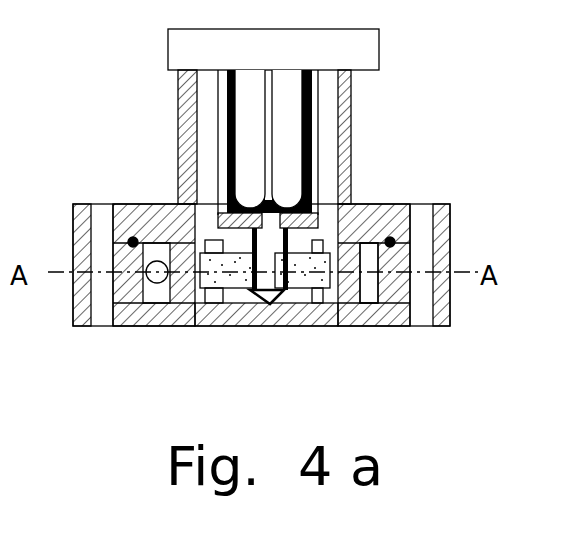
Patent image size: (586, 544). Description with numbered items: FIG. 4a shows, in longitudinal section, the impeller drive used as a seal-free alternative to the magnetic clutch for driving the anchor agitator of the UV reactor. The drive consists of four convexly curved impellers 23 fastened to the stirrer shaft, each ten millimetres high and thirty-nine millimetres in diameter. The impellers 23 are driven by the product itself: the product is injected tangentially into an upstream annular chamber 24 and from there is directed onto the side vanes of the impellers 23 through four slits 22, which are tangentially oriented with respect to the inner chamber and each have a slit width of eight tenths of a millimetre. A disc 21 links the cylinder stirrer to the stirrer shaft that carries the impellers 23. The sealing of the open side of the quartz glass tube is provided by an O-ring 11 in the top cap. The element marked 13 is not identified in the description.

The O-ring 11 is at (135, 246).
The ball 13 is at (152, 262).
The disc 21 is at (302, 212).
The slits 22 is at (318, 288).
The convexly curved impellers 23 is at (237, 272).
The upstream annular chamber 24 is at (368, 290).